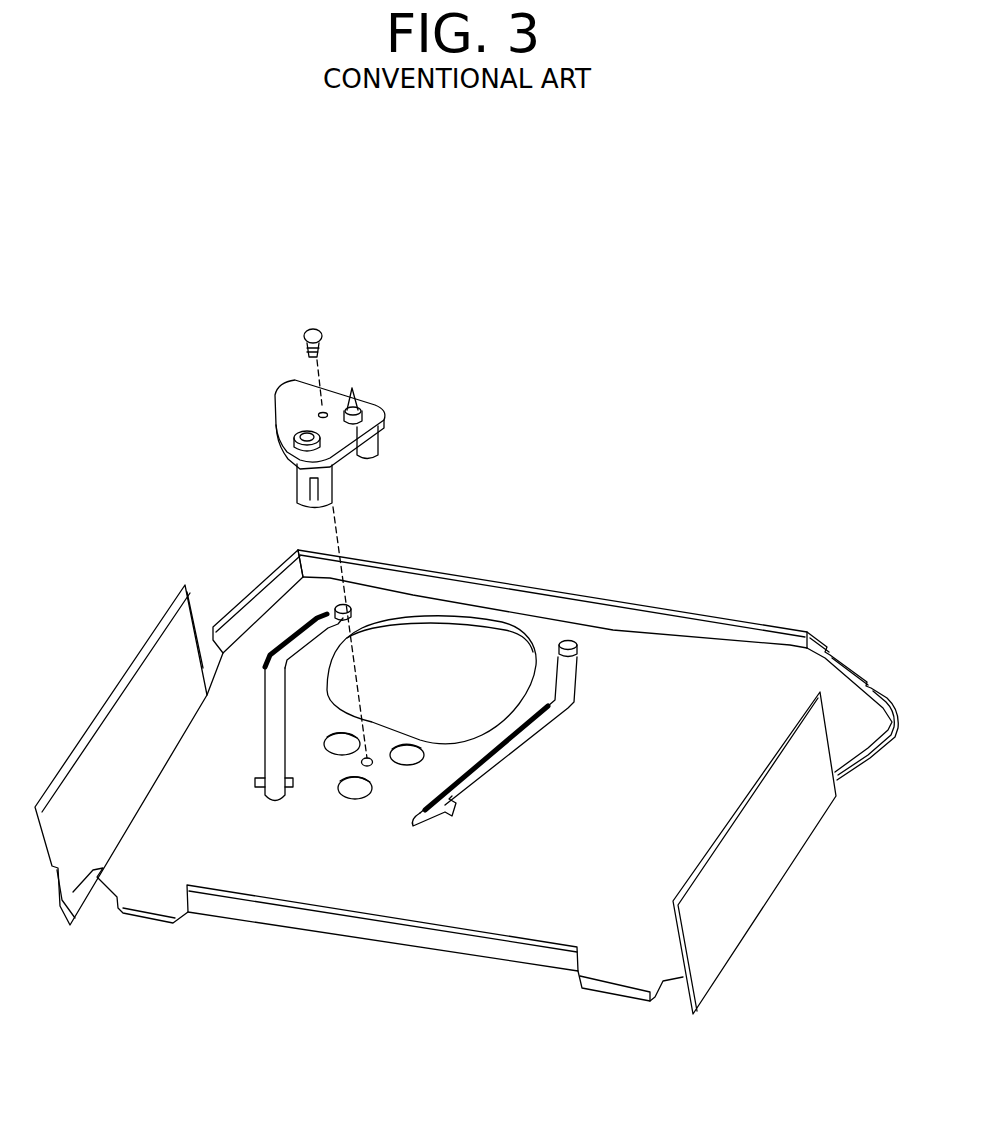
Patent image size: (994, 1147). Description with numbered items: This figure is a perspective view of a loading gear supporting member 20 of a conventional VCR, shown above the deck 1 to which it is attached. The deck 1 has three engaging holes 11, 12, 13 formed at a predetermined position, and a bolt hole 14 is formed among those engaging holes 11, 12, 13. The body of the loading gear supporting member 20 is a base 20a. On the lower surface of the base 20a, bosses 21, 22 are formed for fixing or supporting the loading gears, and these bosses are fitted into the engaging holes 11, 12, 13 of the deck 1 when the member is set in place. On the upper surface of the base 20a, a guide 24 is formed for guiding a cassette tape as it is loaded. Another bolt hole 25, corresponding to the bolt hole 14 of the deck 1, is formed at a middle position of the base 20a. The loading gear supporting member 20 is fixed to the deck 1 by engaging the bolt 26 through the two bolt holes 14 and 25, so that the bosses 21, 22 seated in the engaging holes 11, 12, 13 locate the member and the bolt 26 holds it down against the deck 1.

The deck 1 is at (756, 864).
The engaging hole 11 is at (350, 796).
The engaging hole 12 is at (413, 756).
The engaging hole 13 is at (317, 760).
The bolt hole 14 is at (372, 766).
The loading gear supporting member 20 is at (309, 513).
The base 20a is at (331, 393).
The boss 21 is at (303, 490).
The boss 22 is at (378, 440).
The guide 24 is at (358, 393).
The bolt hole 25 is at (318, 415).
The bolt 26 is at (317, 331).